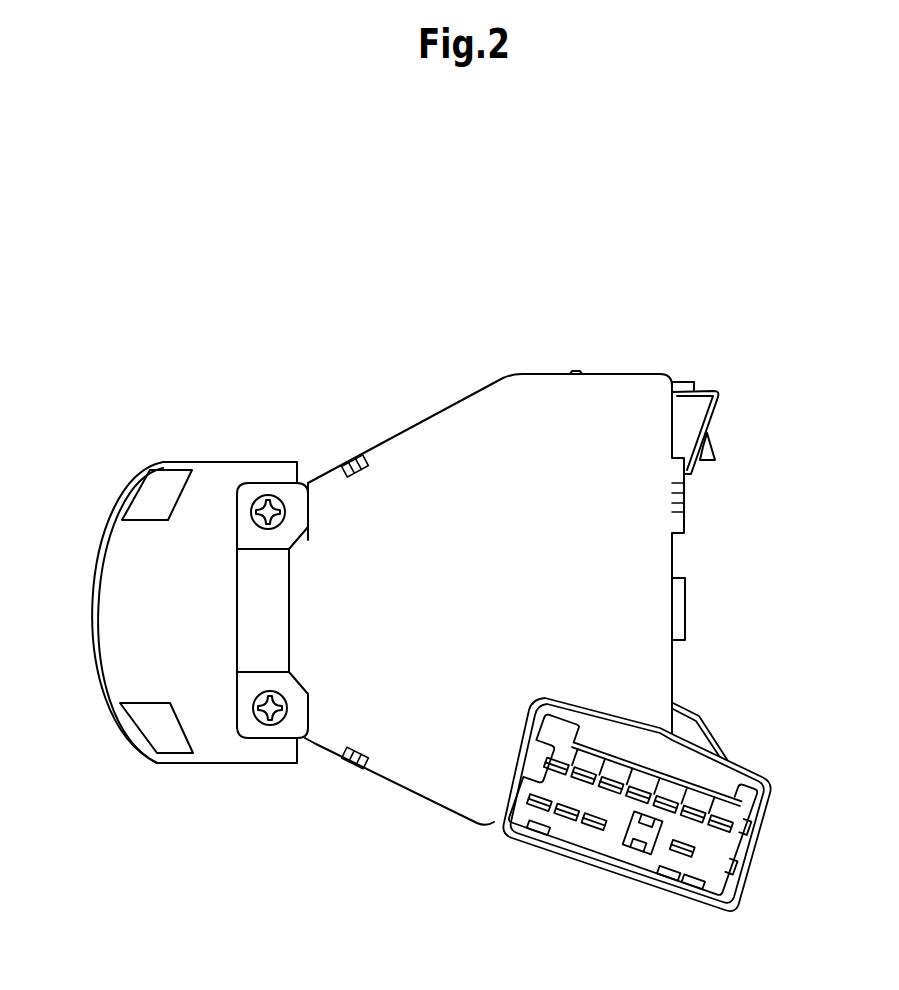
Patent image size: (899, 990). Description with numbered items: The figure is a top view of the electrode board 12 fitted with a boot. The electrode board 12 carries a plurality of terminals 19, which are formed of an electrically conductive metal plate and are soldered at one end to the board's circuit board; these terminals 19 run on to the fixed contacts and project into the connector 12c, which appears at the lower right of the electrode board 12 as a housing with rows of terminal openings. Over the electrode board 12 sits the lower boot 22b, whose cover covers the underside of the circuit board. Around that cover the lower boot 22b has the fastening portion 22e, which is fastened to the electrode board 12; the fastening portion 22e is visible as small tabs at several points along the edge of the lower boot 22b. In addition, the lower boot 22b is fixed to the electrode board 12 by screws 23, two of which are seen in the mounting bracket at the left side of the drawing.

The electrode board 12 is at (660, 843).
The connector 12c is at (760, 858).
The terminals 19 is at (608, 843).
The lower boot 22b is at (435, 772).
The fastening portion 22e is at (352, 457).
The screws 23 is at (257, 700).